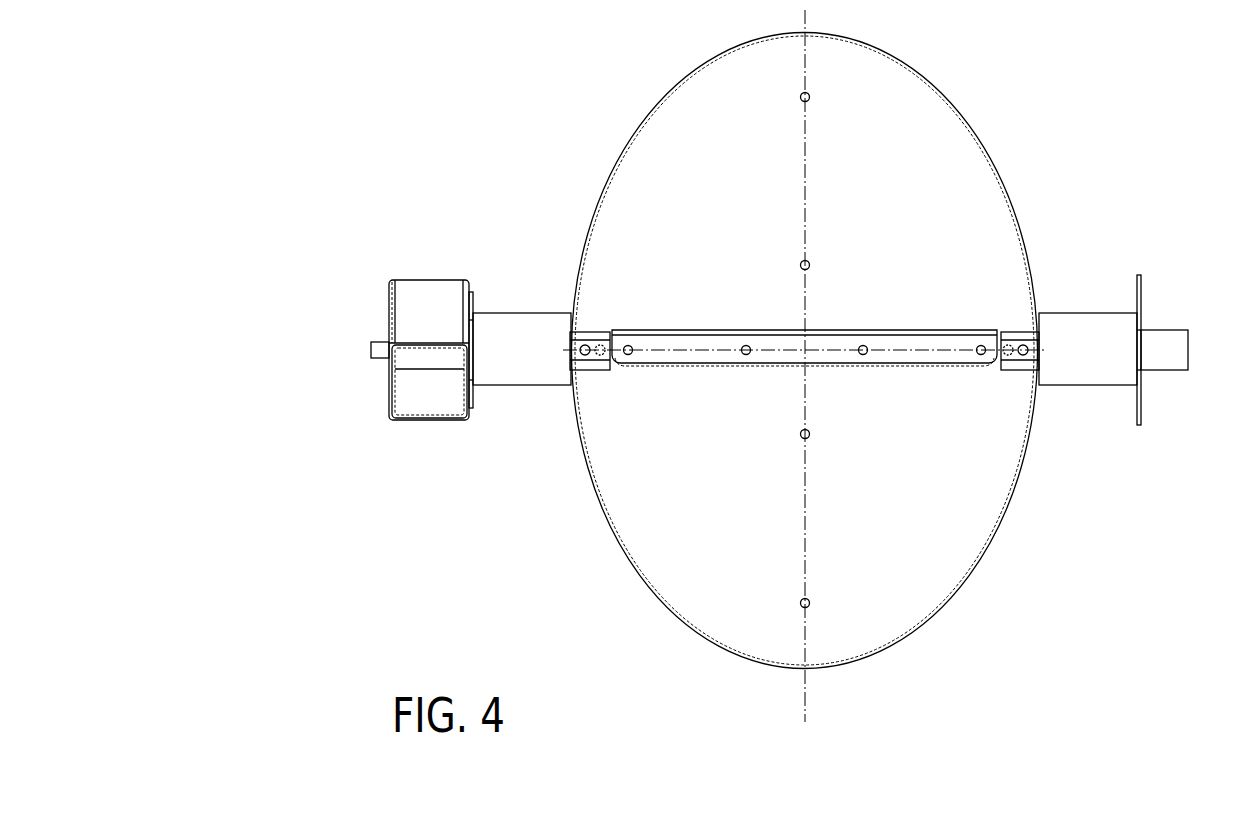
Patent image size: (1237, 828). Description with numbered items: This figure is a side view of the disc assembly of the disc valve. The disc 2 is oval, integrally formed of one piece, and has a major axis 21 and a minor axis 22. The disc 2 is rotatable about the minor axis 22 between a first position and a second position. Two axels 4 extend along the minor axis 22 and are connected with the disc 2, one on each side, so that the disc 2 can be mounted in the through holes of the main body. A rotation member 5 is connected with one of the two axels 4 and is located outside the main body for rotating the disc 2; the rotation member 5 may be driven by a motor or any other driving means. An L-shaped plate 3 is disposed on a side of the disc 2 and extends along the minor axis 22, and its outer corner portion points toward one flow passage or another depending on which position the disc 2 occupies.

The disc 2 is at (987, 228).
The major axis 21 is at (805, 138).
The minor axis 22 is at (660, 350).
The L-shaped plate 3 is at (903, 367).
The axels 4 is at (585, 365).
The rotation member 5 is at (377, 343).